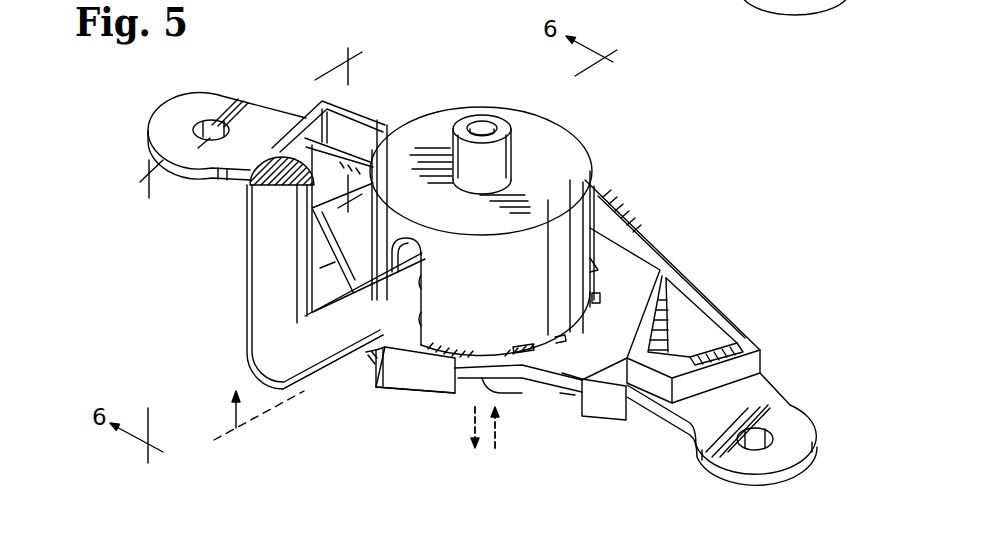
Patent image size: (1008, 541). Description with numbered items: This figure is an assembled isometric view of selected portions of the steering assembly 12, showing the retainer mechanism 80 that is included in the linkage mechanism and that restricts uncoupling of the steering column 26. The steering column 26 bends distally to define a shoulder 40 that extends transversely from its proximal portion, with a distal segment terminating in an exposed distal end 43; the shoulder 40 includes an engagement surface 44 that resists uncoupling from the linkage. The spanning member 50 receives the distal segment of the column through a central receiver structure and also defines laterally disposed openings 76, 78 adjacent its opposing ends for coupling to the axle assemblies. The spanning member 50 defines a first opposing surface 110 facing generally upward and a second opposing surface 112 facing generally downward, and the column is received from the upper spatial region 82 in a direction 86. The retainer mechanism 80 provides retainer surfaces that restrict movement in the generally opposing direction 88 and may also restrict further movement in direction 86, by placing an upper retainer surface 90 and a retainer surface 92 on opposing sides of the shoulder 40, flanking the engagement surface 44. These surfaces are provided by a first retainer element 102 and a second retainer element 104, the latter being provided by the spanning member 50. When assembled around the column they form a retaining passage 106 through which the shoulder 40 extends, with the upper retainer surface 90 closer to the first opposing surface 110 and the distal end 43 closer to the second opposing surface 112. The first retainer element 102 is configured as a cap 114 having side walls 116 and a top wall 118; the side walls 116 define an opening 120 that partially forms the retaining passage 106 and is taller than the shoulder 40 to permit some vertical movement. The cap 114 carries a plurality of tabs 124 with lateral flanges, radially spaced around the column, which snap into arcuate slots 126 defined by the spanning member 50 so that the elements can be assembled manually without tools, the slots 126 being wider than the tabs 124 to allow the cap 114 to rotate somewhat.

The steering assembly 12 is at (88, 119).
The steering column 26 is at (240, 261).
The shoulder 40 is at (343, 348).
The distal end 43 is at (483, 384).
The engagement surface 44 is at (383, 327).
The spanning member 50 is at (417, 408).
The lateral opening 76 is at (766, 435).
The lateral opening 78 is at (203, 120).
The retainer mechanism 80 is at (600, 372).
The upper spatial region 82 is at (236, 416).
The direction 86 is at (473, 436).
The opposing direction 88 is at (498, 436).
The upper retainer surface 90 is at (418, 252).
The retainer surface 92 is at (418, 337).
The first retainer element 102 is at (596, 150).
The second retainer element 104 is at (566, 357).
The retaining passage 106 is at (423, 317).
The first opposing surface 110 is at (620, 272).
The second opposing surface 112 is at (572, 392).
The cap 114 is at (538, 124).
The side walls 116 is at (404, 228).
The top wall 118 is at (448, 118).
The opening 120 is at (425, 280).
The tabs 124 is at (567, 330).
The slots 126 is at (590, 308).